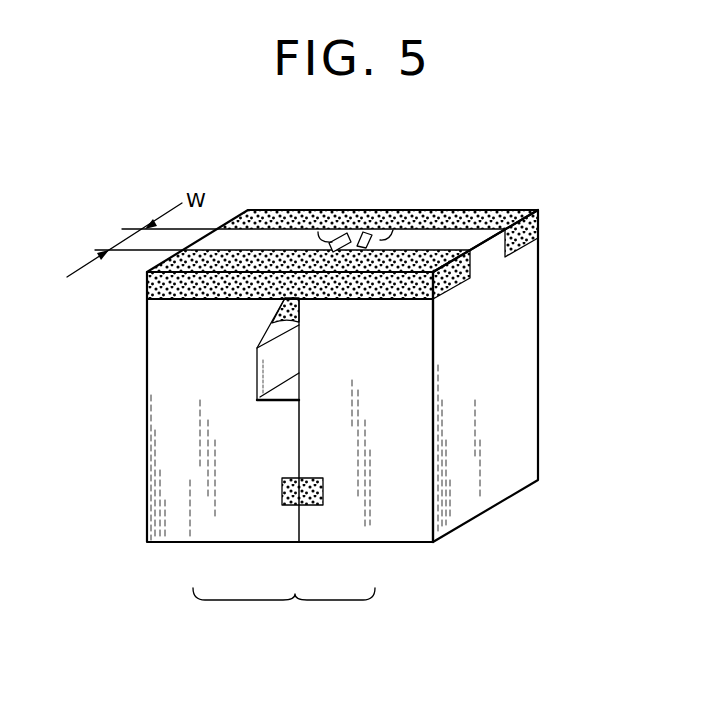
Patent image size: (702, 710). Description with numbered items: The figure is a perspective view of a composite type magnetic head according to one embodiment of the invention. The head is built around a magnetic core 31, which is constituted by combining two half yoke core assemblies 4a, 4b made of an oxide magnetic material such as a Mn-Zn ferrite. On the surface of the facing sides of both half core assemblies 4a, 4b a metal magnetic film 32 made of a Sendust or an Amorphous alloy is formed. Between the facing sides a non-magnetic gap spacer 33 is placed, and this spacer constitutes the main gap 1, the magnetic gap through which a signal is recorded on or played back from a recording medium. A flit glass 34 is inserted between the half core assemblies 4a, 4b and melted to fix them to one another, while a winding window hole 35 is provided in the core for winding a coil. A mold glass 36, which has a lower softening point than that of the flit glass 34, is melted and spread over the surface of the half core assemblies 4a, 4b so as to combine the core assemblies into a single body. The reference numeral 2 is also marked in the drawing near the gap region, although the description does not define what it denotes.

The main gap 1 is at (362, 243).
The terminal electrode 2 is at (318, 232).
The magnetic core 31 is at (455, 238).
The metal magnetic film 32 is at (367, 235).
The non-magnetic gap spacer 33 is at (348, 240).
The flit glass 34 is at (282, 492).
The winding window hole 35 is at (288, 394).
The mold glass 36 is at (422, 212).
The half yoke core assembly 4a is at (227, 533).
The half yoke core assembly 4b is at (352, 532).